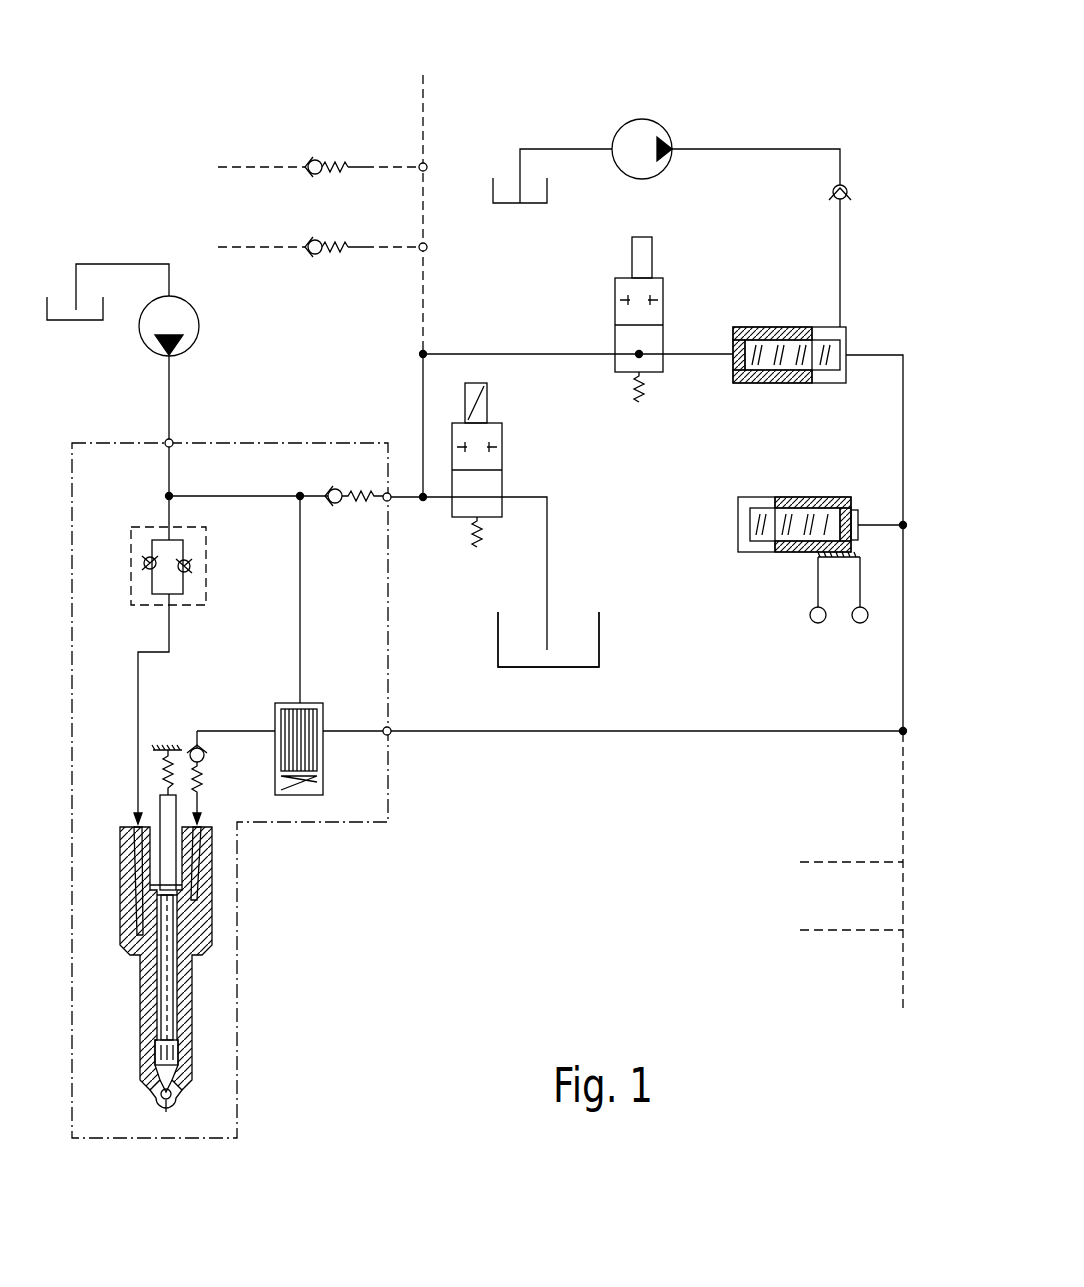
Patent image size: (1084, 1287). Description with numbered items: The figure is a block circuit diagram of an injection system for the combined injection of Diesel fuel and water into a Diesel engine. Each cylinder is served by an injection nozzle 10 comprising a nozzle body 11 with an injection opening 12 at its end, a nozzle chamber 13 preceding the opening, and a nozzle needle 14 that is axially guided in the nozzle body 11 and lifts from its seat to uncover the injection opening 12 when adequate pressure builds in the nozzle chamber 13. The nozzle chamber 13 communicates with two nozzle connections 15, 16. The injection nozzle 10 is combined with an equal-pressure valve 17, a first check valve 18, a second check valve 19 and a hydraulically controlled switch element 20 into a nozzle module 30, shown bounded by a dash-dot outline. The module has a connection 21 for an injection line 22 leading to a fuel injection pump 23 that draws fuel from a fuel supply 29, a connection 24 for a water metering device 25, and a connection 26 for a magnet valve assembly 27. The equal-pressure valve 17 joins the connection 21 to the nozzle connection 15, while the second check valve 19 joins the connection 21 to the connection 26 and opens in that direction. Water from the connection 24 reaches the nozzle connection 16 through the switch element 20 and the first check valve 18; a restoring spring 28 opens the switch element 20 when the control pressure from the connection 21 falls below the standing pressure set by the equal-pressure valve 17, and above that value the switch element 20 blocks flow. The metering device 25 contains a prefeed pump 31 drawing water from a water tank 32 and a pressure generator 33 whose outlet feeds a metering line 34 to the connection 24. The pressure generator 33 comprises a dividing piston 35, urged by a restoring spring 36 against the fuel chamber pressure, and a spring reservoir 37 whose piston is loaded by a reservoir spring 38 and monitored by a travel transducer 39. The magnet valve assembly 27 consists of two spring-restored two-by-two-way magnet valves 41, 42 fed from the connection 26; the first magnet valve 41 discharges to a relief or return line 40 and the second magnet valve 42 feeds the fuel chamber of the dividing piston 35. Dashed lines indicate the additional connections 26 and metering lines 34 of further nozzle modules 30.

The injection nozzle 10 is at (198, 985).
The nozzle body 11 is at (200, 925).
The injection opening 12 is at (181, 1090).
The nozzle chamber 13 is at (176, 1050).
The nozzle needle 14 is at (170, 1017).
The nozzle connection 15 is at (133, 825).
The nozzle connection 16 is at (203, 825).
The equal-pressure valve 17 is at (206, 580).
The first check valve 18 is at (190, 747).
The second check valve 19 is at (345, 508).
The hydraulically controlled switch element 20 is at (322, 768).
The connection for the injection line 21 is at (173, 440).
The injection line 22 is at (170, 390).
The fuel injection pump 23 is at (187, 318).
The connection for the water metering device 24 is at (392, 735).
The water metering device 25 is at (690, 663).
The connection for the magnet valve assembly 26 is at (426, 164).
The magnet valve assembly 27 is at (555, 435).
The restoring spring 28 is at (297, 790).
The fuel supply 29 is at (80, 321).
The nozzle module 30 is at (390, 824).
The prefeed pump 31 is at (637, 135).
The water tank 32 is at (525, 205).
The pressure generator 33 is at (770, 415).
The metering line 34 is at (742, 738).
The dividing piston 35 is at (778, 322).
The restoring spring 36 is at (735, 385).
The spring reservoir 37 is at (798, 492).
The reservoir spring 38 is at (772, 543).
The travel transducer 39 is at (839, 605).
The relief or return line 40 is at (548, 590).
The first magnet valve 41 is at (502, 458).
The second magnet valve 42 is at (663, 310).